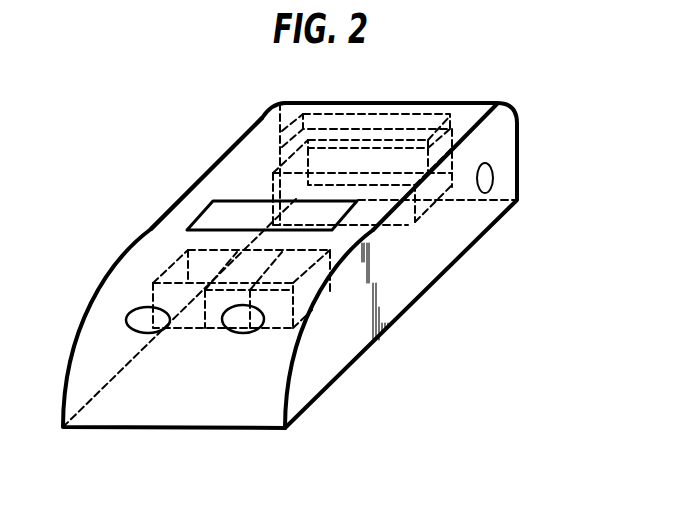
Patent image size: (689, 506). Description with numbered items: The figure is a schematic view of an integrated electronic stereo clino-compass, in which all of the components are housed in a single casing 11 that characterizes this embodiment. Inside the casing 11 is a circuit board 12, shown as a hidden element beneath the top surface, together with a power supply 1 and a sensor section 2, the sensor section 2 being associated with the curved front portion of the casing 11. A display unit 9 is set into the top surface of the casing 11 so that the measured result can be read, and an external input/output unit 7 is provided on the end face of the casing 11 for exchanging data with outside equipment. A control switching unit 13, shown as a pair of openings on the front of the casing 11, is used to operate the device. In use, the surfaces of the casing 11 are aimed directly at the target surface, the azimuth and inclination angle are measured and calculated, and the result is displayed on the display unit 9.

The power supply 1 is at (407, 230).
The sensor section 2 is at (280, 333).
The external input/output unit 7 is at (493, 178).
The display unit 9 is at (215, 223).
The casing 11 is at (215, 155).
The circuit board 12 is at (405, 106).
The control switching unit 13 is at (146, 333).